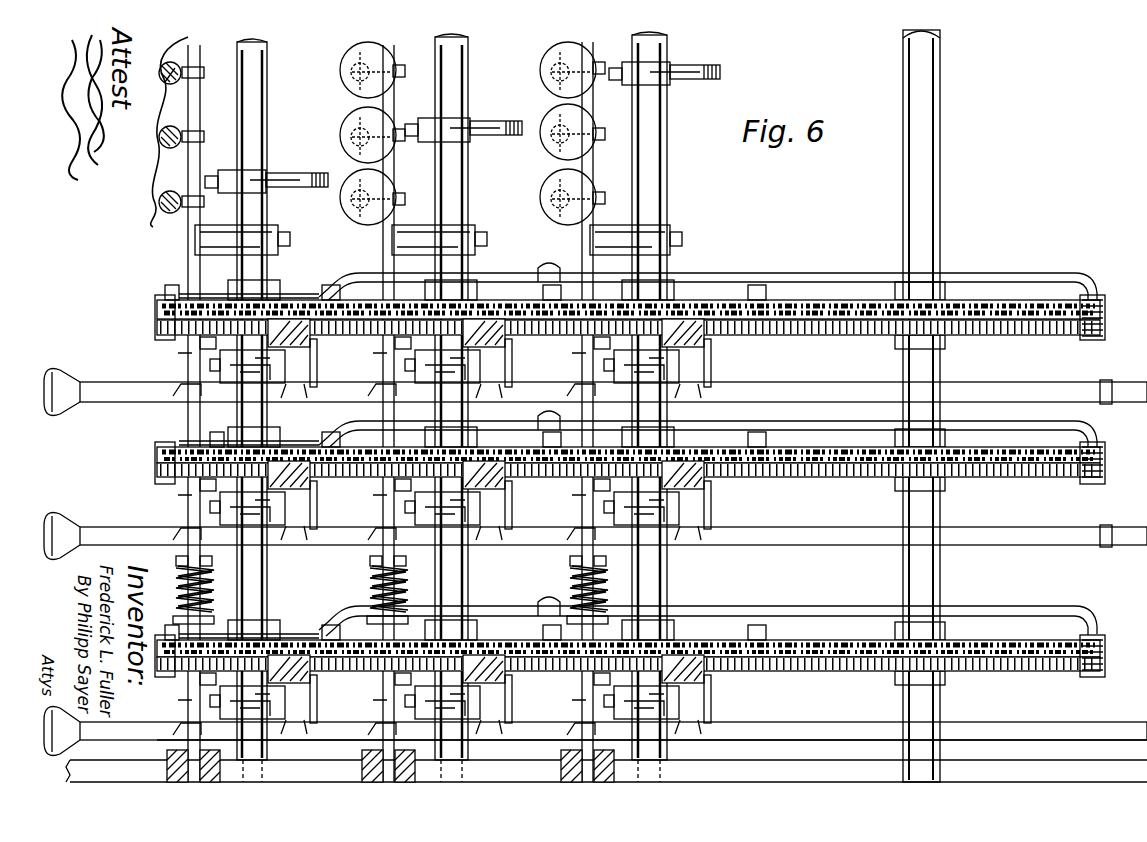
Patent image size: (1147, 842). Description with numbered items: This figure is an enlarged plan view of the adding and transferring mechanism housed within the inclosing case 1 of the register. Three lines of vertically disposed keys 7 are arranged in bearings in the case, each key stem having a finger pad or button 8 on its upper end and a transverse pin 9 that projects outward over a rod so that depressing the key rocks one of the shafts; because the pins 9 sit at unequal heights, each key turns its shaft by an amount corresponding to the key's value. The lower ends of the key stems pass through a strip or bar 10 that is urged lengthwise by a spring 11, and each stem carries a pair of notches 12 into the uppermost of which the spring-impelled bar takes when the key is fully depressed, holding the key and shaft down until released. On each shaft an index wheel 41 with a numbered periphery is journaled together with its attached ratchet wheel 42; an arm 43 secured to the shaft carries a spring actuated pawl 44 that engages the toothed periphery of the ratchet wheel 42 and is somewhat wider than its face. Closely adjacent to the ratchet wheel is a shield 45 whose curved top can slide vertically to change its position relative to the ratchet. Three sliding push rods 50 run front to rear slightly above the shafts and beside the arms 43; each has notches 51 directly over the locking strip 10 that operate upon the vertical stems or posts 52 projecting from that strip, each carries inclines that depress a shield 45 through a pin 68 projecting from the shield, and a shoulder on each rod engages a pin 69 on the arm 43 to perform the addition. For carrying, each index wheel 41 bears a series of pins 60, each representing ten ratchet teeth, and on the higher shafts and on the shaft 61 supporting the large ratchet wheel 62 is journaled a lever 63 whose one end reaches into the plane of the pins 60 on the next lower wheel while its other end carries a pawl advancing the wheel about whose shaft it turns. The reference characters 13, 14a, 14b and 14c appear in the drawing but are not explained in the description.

The inclosing case 1 is at (606, 761).
The keys 7 is at (168, 132).
The finger pad or button 8 is at (344, 94).
The transverse pin 9 is at (399, 121).
The strip or bar 10 is at (190, 252).
The spring 11 is at (176, 578).
The notches 12 is at (160, 70).
The clamp arm 13 is at (462, 117).
The pipe 14a is at (268, 410).
The pipe 14b is at (467, 408).
The pipe 14c is at (665, 407).
The index wheel 41 is at (628, 455).
The ratchet wheel 42 is at (621, 508).
The arm 43 is at (409, 517).
The spring actuated pawl 44 is at (507, 468).
The shield 45 is at (444, 534).
The sliding push rods 50 is at (595, 560).
The notches 51 is at (373, 552).
The vertical stems or posts 52 is at (371, 527).
The pins 60 is at (458, 444).
The shaft 61 is at (928, 148).
The large ratchet wheel 62 is at (630, 488).
The lever 63 is at (638, 445).
The pin 68 is at (523, 547).
The pin 69 is at (494, 569).